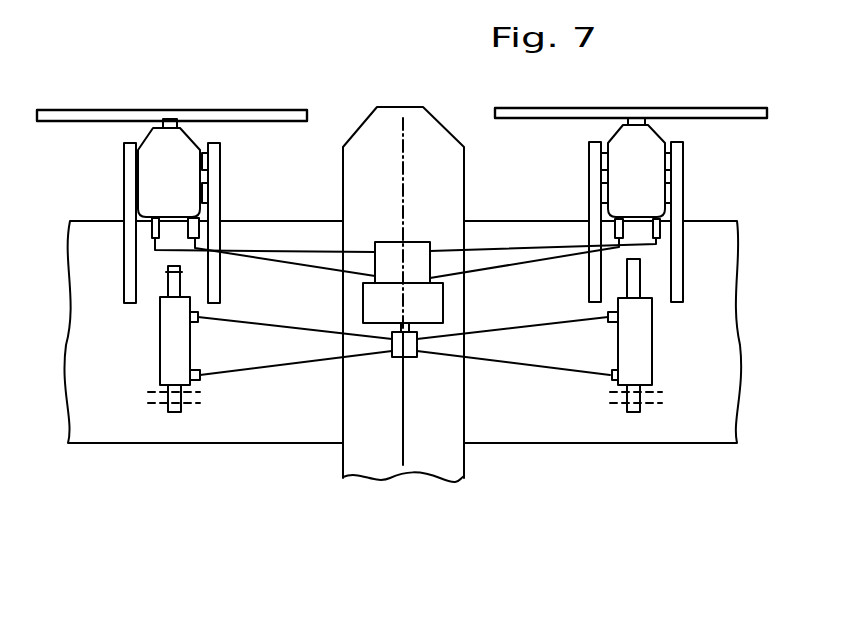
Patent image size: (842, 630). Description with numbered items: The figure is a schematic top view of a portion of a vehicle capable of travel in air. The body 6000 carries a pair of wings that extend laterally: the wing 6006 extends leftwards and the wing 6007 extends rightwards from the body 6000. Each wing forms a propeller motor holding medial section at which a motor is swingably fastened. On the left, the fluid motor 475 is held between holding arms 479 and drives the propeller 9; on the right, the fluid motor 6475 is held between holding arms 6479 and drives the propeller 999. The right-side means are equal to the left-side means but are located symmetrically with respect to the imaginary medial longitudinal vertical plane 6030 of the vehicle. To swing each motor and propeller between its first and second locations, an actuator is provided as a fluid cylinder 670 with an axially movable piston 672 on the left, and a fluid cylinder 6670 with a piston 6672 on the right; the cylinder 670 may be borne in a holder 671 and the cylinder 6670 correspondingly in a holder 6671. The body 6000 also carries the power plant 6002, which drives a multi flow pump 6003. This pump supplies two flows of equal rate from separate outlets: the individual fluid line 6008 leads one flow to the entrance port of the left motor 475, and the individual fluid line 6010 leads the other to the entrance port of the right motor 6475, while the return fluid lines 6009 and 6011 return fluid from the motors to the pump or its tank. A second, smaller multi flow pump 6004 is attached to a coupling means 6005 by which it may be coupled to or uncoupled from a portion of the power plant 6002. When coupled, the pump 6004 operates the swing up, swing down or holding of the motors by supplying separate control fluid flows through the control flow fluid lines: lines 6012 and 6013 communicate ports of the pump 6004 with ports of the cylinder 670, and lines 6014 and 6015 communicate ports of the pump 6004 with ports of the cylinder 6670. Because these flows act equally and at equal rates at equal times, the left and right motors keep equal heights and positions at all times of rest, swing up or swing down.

The propeller 9 is at (72, 123).
The propeller 999 is at (753, 119).
The fluid motor 475 is at (152, 183).
The fluid motor 6475 is at (657, 182).
The holding arms 479 is at (212, 178).
The holding arms 6479 is at (595, 206).
The fluid cylinder 670 is at (160, 336).
The fluid cylinder 6670 is at (647, 338).
The holder 671 is at (172, 403).
The holder 6671 is at (643, 403).
The piston 672 is at (168, 280).
The piston 6672 is at (640, 279).
The body 6000 is at (452, 463).
The power plant 6002 is at (437, 303).
The multi flow pump 6003 is at (417, 252).
The second multi flow pump 6004 is at (398, 358).
The coupling means 6005 is at (400, 330).
The wing 6006 is at (272, 433).
The wing 6007 is at (560, 434).
The fluid line 6008 is at (236, 247).
The return fluid line 6009 is at (294, 269).
The fluid line 6010 is at (473, 248).
The return fluid line 6011 is at (512, 266).
The control flow fluid line 6012 is at (207, 320).
The control flow fluid line 6013 is at (229, 374).
The control flow fluid line 6014 is at (518, 328).
The control flow fluid line 6015 is at (585, 373).
The medial longitudinal vertical plane 6030 is at (406, 450).